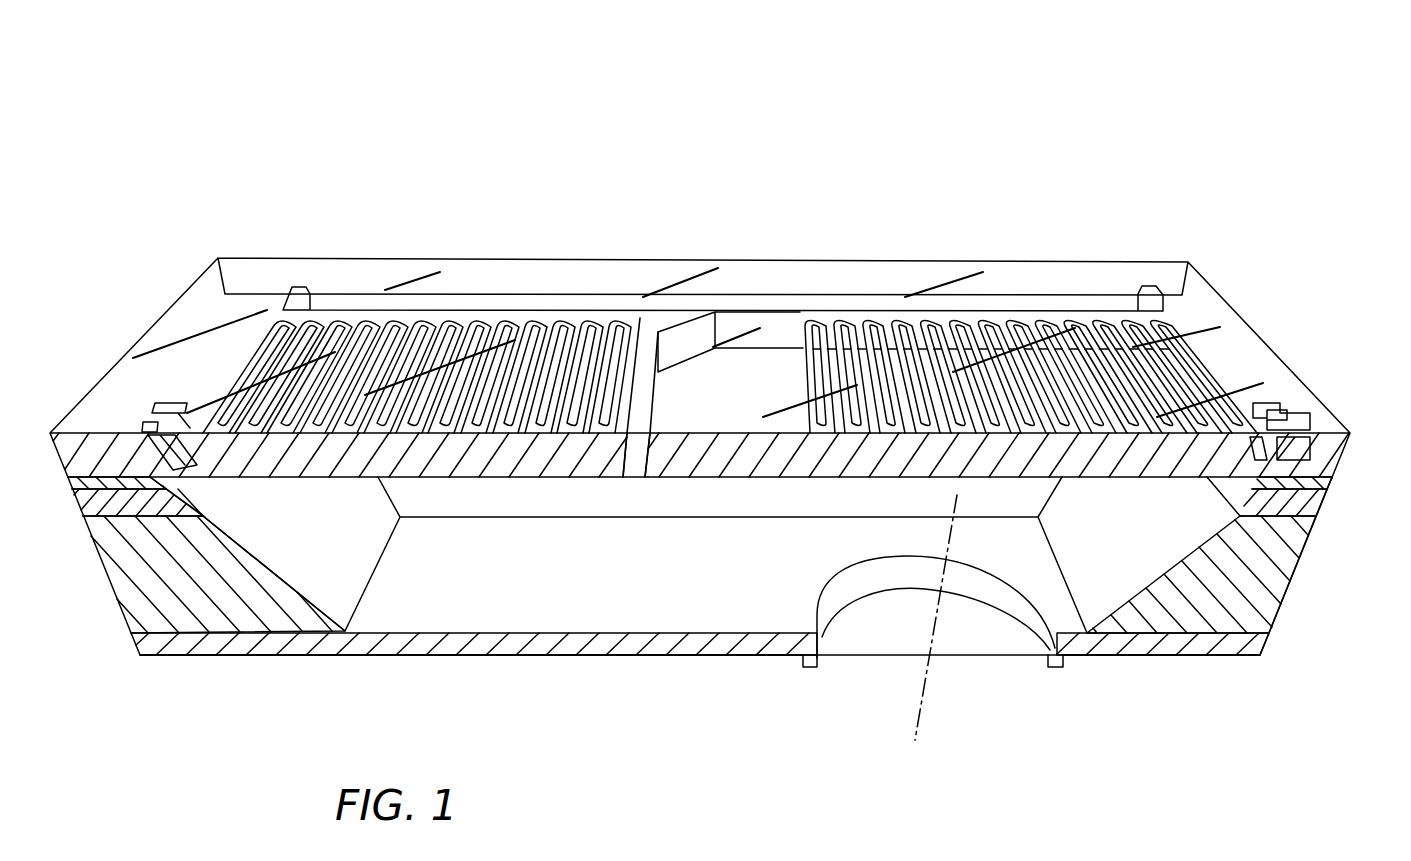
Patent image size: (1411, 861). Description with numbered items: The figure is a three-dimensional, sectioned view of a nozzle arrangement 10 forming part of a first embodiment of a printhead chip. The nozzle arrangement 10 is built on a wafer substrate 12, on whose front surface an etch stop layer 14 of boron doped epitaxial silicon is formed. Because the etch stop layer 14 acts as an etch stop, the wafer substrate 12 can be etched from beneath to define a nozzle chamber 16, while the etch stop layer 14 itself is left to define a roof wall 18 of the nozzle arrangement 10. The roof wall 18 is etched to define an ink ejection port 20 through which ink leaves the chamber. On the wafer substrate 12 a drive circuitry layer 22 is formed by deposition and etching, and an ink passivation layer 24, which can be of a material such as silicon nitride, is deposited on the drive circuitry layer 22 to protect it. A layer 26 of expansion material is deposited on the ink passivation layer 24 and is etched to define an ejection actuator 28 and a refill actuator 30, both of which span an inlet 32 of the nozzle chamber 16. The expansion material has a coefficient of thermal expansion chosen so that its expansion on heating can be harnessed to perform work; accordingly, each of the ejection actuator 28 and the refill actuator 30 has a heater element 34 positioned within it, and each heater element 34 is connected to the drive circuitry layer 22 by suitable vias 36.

The nozzle arrangement 10 is at (343, 197).
The wafer substrate 12 is at (1268, 595).
The etch stop layer 14 is at (1257, 657).
The nozzle chamber 16 is at (657, 540).
The roof wall 18 is at (738, 657).
The ink ejection port 20 is at (990, 637).
The drive circuitry layer 22 is at (1317, 512).
The ink passivation layer 24 is at (1330, 487).
The layer of expansion material 26 is at (1352, 434).
The ejection actuator 28 is at (735, 368).
The refill actuator 30 is at (470, 478).
The inlet 32 is at (670, 312).
The heater element 34 is at (568, 337).
The vias 36 is at (160, 403).